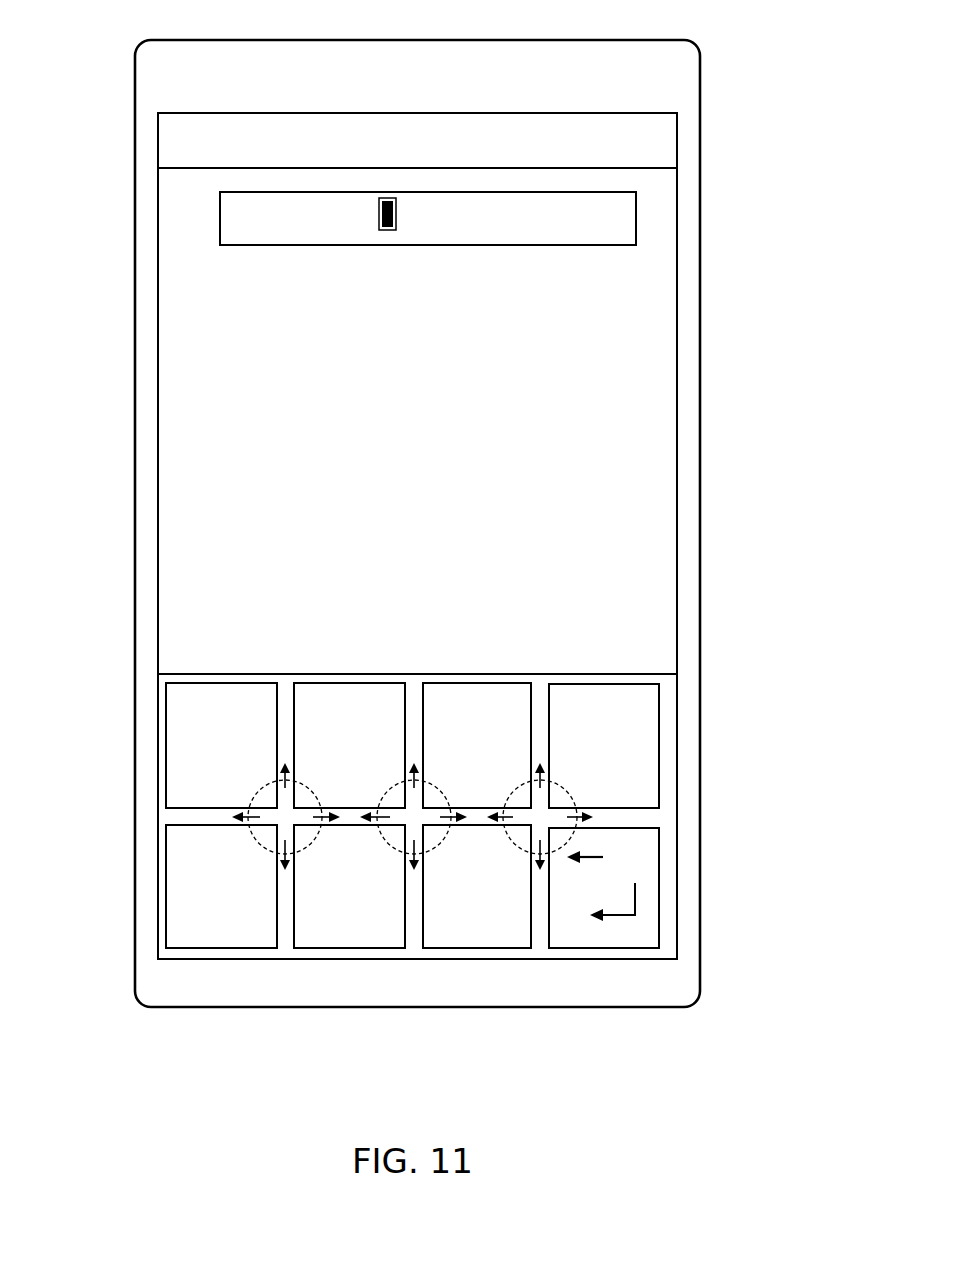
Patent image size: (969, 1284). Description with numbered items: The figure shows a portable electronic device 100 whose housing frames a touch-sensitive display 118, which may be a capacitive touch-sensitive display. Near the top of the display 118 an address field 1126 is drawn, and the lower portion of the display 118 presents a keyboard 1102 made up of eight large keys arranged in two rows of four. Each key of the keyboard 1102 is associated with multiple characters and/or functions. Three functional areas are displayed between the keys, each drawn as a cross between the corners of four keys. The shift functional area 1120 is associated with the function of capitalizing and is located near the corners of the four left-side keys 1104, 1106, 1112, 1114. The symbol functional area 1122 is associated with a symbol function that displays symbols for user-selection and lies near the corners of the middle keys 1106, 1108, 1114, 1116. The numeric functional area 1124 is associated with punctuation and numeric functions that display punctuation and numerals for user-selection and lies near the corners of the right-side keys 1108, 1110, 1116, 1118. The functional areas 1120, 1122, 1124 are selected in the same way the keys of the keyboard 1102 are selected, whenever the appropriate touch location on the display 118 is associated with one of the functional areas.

The portable electronic device 100 is at (697, 28).
The touch-sensitive display 118 is at (647, 329).
The URL address field 1126 is at (598, 218).
The keyboard 1102 is at (360, 675).
The left-side key 1104 is at (222, 745).
The left-side key 1106 is at (310, 693).
The middle key 1108 is at (513, 692).
The right-side key 1110 is at (634, 743).
The left-side key 1112 is at (212, 902).
The left-side key 1114 is at (367, 925).
The middle key 1116 is at (492, 920).
The right-side key 1118 is at (637, 915).
The shift functional area 1120 is at (285, 842).
The symbol functional area 1122 is at (412, 847).
The numeric functional area 1124 is at (548, 853).